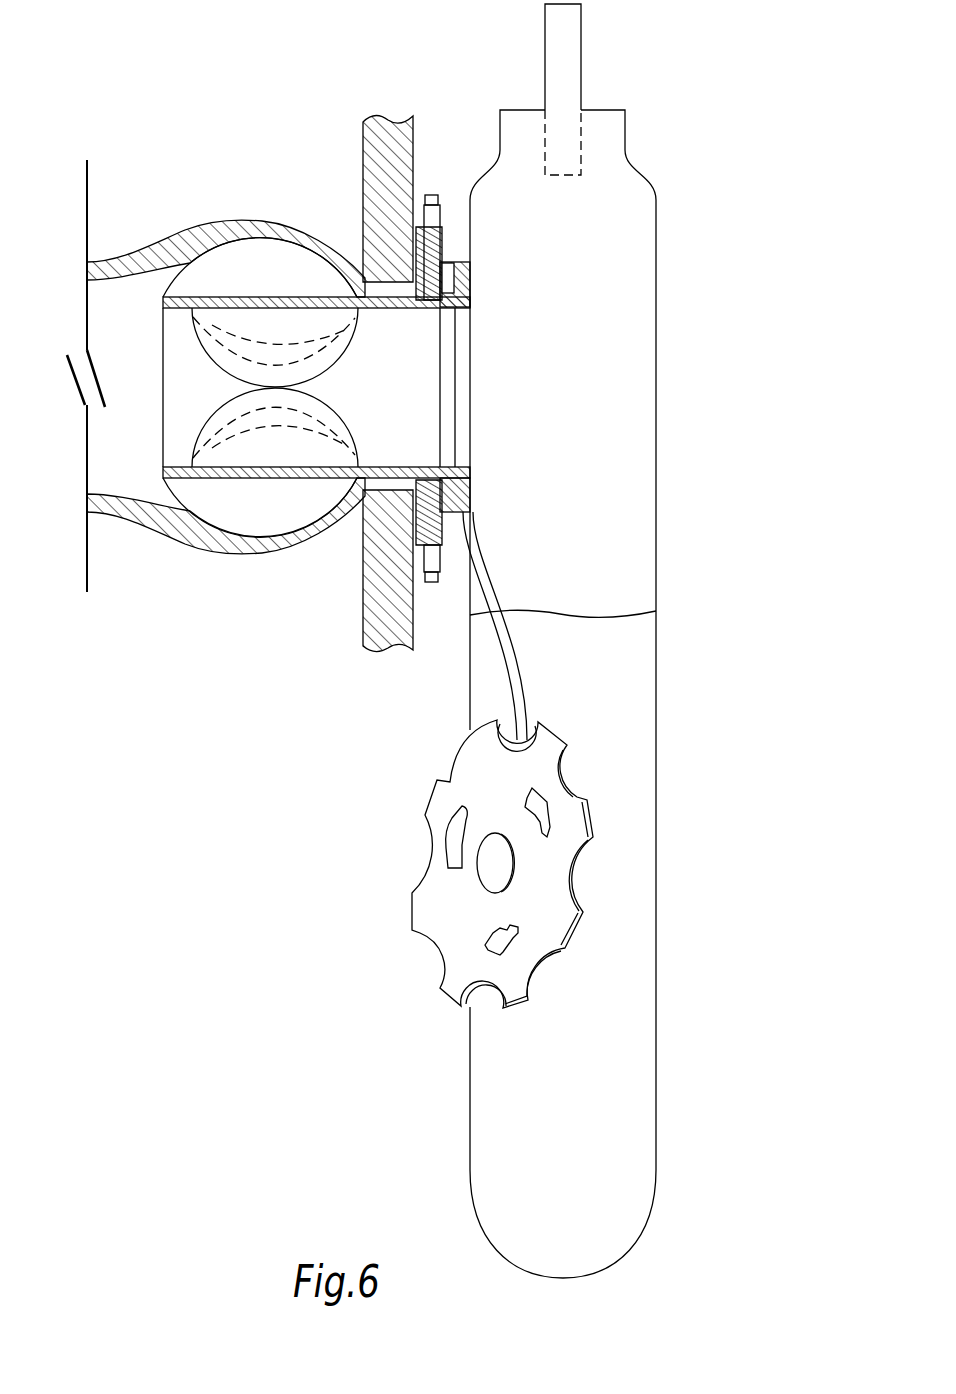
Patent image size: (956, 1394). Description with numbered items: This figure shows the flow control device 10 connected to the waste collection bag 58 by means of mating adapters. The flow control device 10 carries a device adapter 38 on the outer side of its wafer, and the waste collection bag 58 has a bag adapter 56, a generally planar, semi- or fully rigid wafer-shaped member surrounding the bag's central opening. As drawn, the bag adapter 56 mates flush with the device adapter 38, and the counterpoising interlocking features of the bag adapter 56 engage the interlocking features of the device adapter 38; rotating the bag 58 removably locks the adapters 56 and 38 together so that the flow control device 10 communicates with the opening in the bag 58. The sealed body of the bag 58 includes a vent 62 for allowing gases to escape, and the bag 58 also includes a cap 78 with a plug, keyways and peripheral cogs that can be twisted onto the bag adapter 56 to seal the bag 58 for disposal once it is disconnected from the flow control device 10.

The flow control device 10 is at (125, 327).
The device adapter 38 is at (450, 260).
The bag adapter 56 is at (472, 272).
The waste collection bag 58 is at (638, 167).
The vent 62 is at (581, 50).
The cap 78 is at (426, 797).